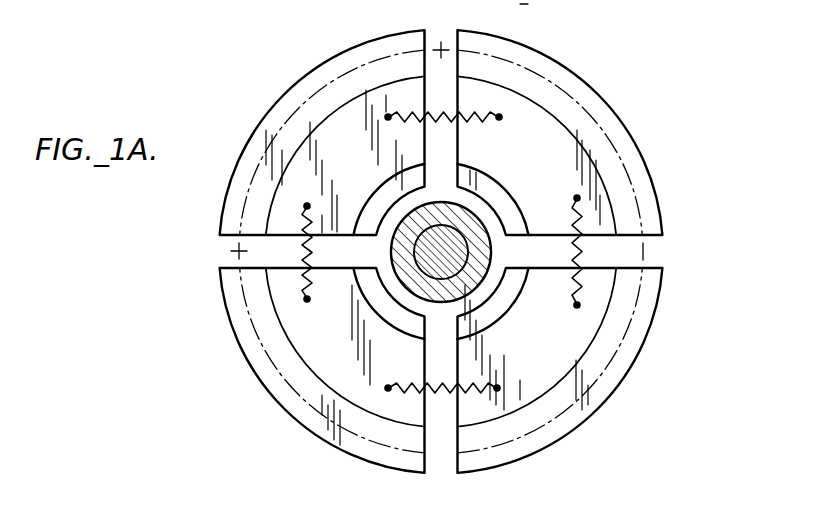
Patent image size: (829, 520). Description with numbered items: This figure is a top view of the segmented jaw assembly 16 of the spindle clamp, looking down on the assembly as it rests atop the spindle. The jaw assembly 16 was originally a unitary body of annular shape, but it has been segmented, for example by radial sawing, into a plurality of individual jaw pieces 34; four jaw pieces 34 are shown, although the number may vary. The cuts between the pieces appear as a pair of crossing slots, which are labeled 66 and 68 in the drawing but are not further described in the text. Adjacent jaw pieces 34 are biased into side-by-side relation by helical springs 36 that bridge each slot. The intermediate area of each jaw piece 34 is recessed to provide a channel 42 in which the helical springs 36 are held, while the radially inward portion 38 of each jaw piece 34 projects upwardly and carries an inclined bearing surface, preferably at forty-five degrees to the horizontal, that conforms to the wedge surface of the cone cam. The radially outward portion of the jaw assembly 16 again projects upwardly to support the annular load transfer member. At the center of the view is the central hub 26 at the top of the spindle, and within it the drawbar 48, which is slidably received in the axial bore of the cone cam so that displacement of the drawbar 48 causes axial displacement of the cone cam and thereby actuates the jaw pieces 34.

The segmented jaw assembly 16 is at (208, 186).
The central hub 26 is at (427, 273).
The jaw pieces 34 is at (307, 72).
The helical springs 36 is at (489, 110).
The radially inward portion 38 is at (370, 200).
The channel 42 is at (397, 88).
The drawbar 48 is at (403, 290).
The slot 66 is at (453, 30).
The slot 68 is at (538, 6).